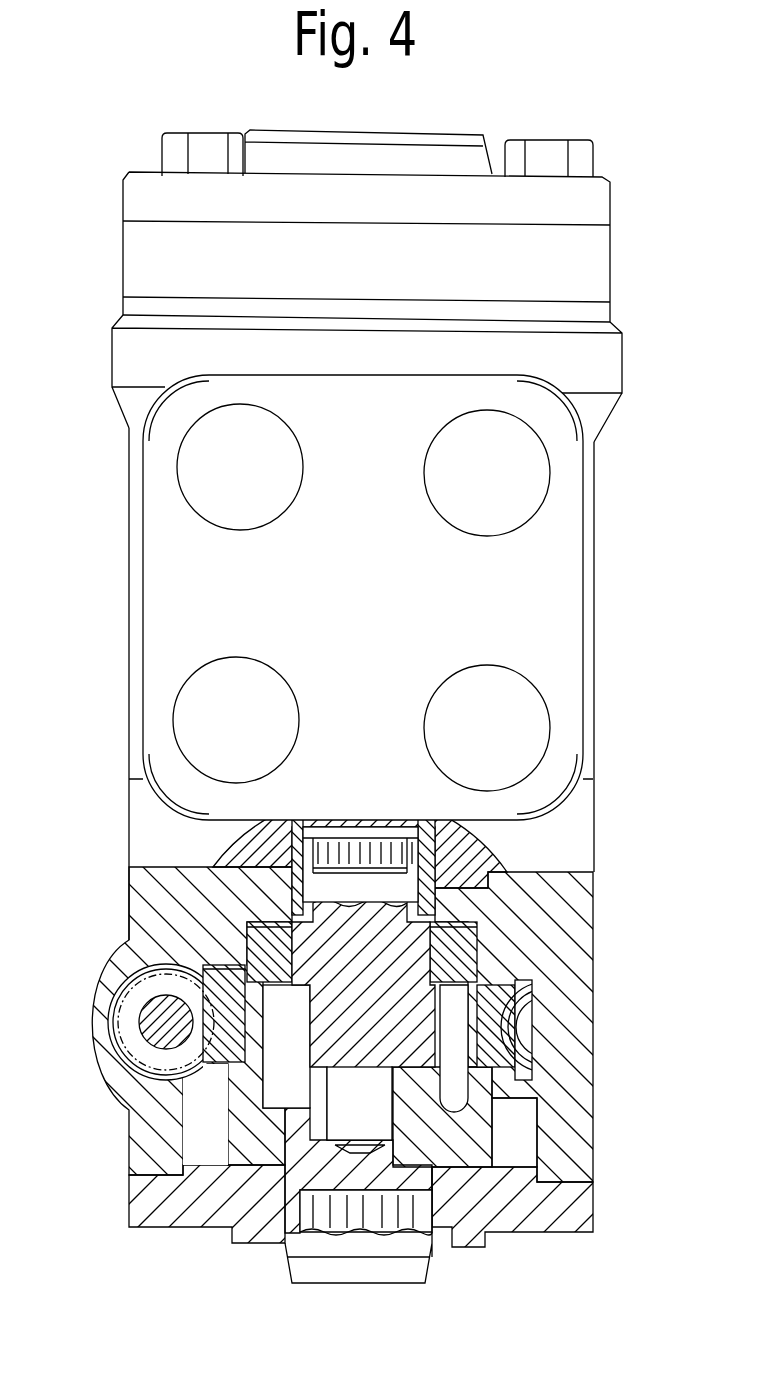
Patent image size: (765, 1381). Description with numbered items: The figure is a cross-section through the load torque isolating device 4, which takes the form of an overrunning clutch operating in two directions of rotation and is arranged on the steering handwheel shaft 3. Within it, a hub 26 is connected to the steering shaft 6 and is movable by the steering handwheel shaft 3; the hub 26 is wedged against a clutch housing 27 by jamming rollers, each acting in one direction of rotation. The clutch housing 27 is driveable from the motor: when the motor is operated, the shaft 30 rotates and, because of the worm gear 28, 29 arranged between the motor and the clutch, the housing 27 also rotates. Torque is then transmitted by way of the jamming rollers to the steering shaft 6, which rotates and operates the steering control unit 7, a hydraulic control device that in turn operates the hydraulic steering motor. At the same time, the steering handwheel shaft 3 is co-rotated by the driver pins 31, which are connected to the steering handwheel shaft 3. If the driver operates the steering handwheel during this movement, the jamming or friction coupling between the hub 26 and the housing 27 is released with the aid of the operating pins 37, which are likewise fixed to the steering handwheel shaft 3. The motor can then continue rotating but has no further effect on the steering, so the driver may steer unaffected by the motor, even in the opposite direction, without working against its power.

The steering handwheel shaft 3 is at (410, 1243).
The load torque isolating device 4 is at (607, 987).
The steering shaft 6 is at (370, 852).
The steering control unit 7 is at (565, 560).
The hub 26 is at (213, 862).
The clutch housing 27 is at (227, 1010).
The worm gear 28 is at (515, 1030).
The worm gear 29 is at (130, 1023).
The shaft 30 is at (193, 977).
The driver pins 31 is at (280, 1082).
The operating pins 37 is at (453, 1095).